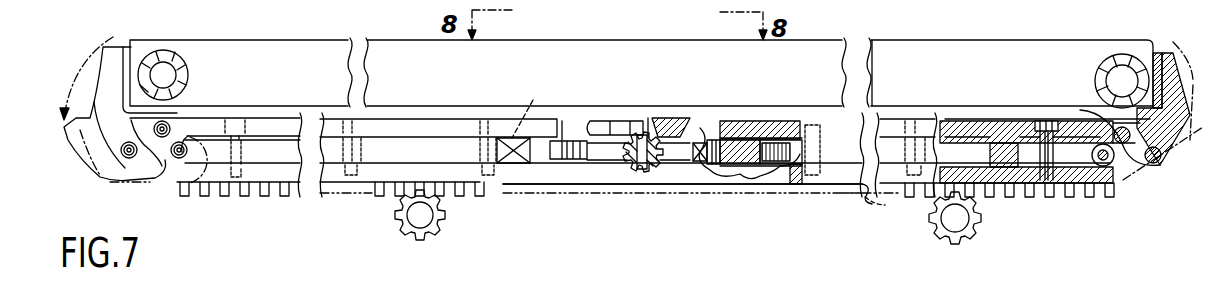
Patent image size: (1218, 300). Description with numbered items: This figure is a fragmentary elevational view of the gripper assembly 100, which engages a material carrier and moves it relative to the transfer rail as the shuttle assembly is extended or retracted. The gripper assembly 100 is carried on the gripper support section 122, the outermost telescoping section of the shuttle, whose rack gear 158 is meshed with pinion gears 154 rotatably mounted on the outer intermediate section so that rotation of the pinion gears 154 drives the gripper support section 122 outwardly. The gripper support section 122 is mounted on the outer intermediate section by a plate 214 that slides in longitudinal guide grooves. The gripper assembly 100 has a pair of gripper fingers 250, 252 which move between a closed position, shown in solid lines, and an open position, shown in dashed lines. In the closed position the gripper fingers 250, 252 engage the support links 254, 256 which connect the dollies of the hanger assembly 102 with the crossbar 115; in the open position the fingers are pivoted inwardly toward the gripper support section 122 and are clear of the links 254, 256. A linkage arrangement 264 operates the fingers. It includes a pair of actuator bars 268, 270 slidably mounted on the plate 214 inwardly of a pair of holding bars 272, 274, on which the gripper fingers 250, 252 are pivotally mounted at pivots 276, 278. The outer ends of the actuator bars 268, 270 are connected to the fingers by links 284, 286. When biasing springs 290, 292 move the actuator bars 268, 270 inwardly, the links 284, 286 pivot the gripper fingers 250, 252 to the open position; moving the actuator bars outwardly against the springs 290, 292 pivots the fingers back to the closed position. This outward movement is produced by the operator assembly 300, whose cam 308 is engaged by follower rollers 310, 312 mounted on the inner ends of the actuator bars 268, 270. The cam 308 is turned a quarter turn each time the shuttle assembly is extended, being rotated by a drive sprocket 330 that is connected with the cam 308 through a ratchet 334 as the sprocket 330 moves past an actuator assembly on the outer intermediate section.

The gripper assembly 100 is at (108, 50).
The hanger assembly 102 is at (655, 38).
The crossbar 115 is at (836, 52).
The gripper support section 122 is at (286, 240).
The pinion gears 154 is at (401, 226).
The rack gear 158 is at (883, 204).
The plate 214 is at (743, 167).
The gripper finger 250 is at (115, 127).
The gripper finger 252 is at (1141, 95).
The support link 254 is at (187, 62).
The support link 256 is at (1101, 66).
The linkage arrangement 264 is at (500, 168).
The actuator bar 268 is at (375, 157).
The actuator bar 270 is at (855, 151).
The holding bar 272 is at (312, 117).
The holding bar 274 is at (973, 133).
The pivot 276 is at (170, 121).
The pivot 278 is at (1123, 135).
The link 284 is at (159, 161).
The link 286 is at (1120, 168).
The biasing spring 290 is at (527, 118).
The biasing spring 292 is at (782, 166).
The operator assembly 300 is at (680, 190).
The cam 308 is at (607, 155).
The follower roller 310 is at (588, 120).
The follower roller 312 is at (728, 146).
The drive sprocket 330 is at (623, 124).
The ratchet 334 is at (660, 140).